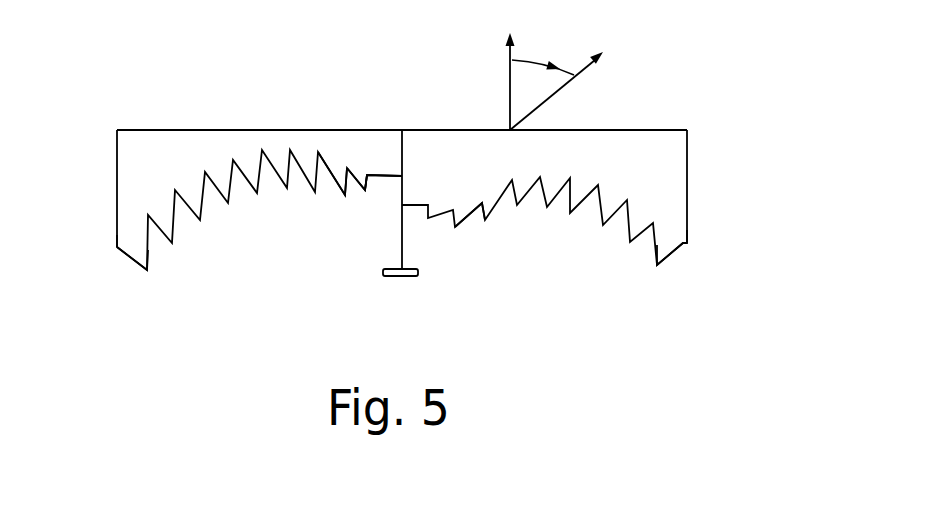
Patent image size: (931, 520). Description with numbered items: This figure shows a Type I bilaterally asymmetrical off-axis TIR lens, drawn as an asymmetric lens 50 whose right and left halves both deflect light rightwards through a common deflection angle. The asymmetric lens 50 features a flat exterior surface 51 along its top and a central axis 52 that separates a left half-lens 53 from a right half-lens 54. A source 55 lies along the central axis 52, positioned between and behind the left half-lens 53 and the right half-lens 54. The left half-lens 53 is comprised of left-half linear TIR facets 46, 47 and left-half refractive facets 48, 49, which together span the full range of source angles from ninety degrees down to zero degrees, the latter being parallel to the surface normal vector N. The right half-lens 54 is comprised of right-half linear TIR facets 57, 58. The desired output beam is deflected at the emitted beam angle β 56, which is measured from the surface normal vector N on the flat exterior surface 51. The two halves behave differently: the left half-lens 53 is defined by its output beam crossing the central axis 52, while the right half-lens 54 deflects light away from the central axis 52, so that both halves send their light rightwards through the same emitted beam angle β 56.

The left-half linear TIR facet 46 is at (132, 245).
The left-half linear TIR facet 47 is at (333, 190).
The left-half refractive facet 48 is at (363, 177).
The left-half refractive facet 49 is at (395, 158).
The asymmetric lens 50 is at (150, 78).
The flat exterior surface 51 is at (225, 128).
The central axis 52 is at (404, 240).
The left half-lens 53 is at (362, 165).
The right half-lens 54 is at (442, 167).
The source 55 is at (400, 278).
The emitted beam angle β 56 is at (553, 33).
The right-half linear TIR facet 57 is at (665, 247).
The right-half linear TIR facet 58 is at (470, 207).